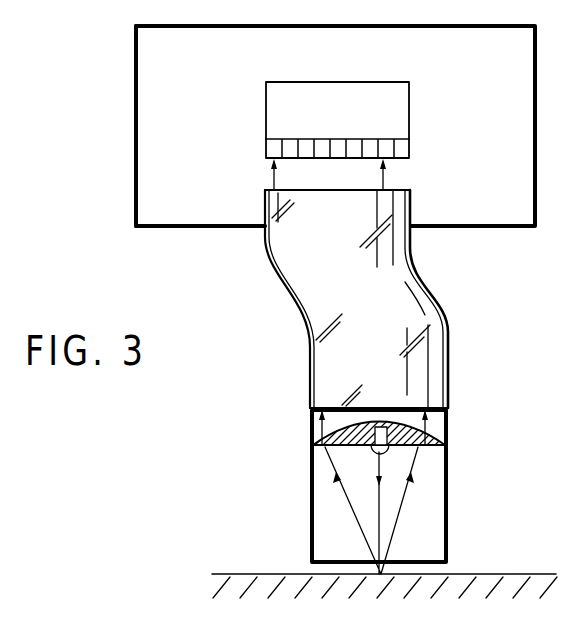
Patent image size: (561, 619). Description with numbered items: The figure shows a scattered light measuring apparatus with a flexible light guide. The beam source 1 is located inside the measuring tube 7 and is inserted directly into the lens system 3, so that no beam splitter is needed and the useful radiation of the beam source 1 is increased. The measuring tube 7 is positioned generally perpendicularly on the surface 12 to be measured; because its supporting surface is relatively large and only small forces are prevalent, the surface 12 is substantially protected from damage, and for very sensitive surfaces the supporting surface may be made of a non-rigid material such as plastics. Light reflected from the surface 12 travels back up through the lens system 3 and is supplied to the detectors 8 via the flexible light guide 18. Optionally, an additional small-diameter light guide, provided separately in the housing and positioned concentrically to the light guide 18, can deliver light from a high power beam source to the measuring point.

The detectors 8 is at (266, 116).
The flexible light guide 18 is at (271, 277).
The measuring tube 7 is at (310, 497).
The lens system 3 is at (343, 427).
The beam source 1 is at (378, 427).
The surface 12 is at (289, 574).